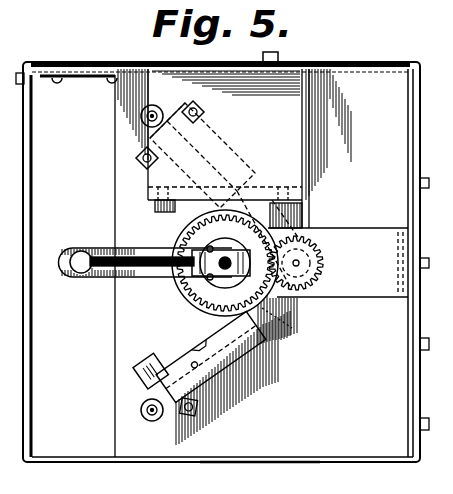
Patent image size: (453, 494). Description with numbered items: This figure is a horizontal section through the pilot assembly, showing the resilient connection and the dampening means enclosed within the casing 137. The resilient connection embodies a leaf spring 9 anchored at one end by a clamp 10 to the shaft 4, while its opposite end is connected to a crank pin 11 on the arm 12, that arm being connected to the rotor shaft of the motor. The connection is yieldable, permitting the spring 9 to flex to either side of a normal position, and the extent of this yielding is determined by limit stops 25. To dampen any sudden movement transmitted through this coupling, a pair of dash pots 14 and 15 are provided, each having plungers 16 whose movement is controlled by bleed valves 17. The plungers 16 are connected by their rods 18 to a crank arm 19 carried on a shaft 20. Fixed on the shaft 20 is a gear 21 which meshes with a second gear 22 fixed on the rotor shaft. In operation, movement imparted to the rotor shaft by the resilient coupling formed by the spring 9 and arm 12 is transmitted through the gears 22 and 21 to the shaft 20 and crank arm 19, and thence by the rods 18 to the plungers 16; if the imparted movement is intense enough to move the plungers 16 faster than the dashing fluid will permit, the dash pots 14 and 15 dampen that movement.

The shaft 4 is at (200, 283).
The leaf spring 9 is at (137, 266).
The clamp 10 is at (272, 238).
The crank pin 11 is at (75, 280).
The arm 12 is at (84, 273).
The dash pot 14 is at (226, 138).
The dash pot 15 is at (233, 362).
The plungers 16 is at (226, 160).
The bleed valves 17 is at (150, 120).
The rods 18 is at (250, 312).
The crank arm 19 is at (312, 281).
The shaft 20 is at (322, 261).
The gear 21 is at (323, 259).
The second gear 22 is at (262, 308).
The limit stops 25 is at (197, 258).
The casing 137 is at (256, 462).